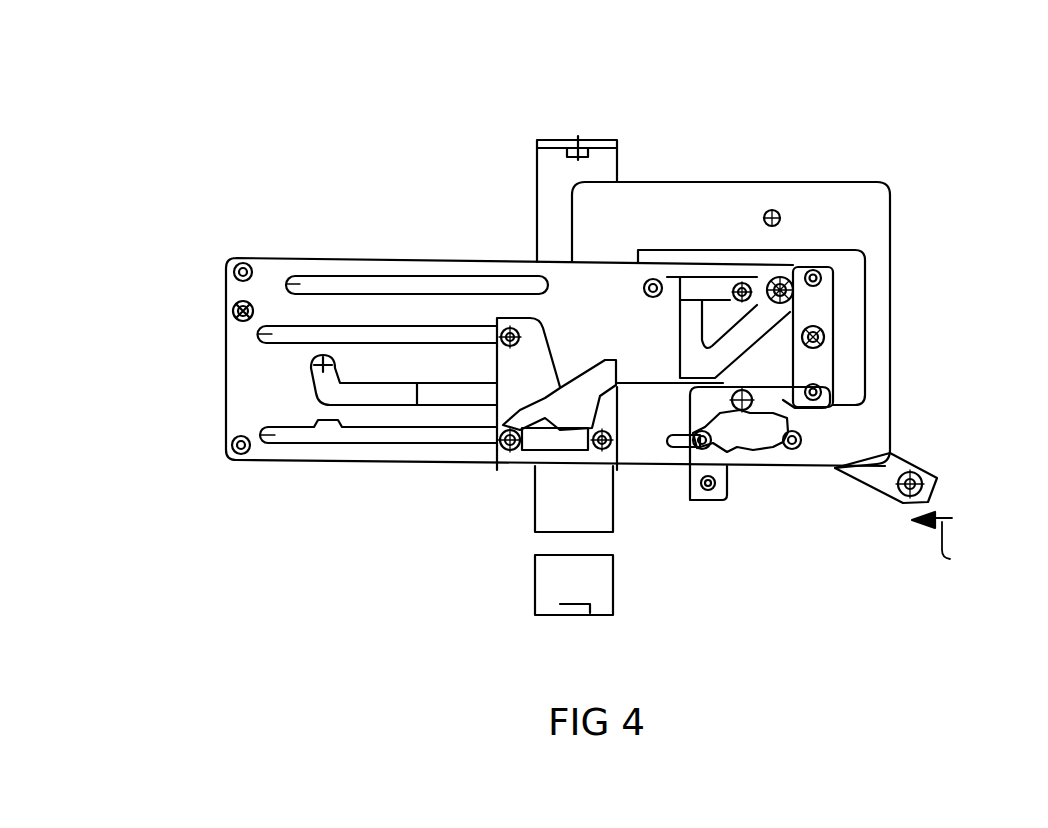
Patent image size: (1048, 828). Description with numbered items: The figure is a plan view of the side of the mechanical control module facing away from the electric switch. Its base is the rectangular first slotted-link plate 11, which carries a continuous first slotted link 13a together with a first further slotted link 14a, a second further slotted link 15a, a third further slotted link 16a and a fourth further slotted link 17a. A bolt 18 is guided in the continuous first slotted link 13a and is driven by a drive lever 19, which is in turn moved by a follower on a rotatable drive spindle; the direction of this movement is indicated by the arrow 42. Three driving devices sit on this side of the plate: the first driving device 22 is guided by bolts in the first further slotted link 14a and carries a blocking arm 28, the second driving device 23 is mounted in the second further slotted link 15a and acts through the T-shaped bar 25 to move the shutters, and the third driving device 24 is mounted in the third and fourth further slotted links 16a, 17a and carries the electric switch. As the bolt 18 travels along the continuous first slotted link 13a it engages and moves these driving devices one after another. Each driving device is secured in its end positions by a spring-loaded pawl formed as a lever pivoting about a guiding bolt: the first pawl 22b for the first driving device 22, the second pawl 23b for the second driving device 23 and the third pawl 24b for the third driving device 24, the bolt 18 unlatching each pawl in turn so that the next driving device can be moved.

The first slotted-link plate 11 is at (283, 258).
The second further slotted link 15a is at (437, 277).
The third further slotted link 16a is at (258, 335).
The continuous first slotted link 13a is at (317, 367).
The fourth further slotted link 17a is at (350, 445).
The third driving device 24 is at (497, 353).
The third pawl 24b is at (622, 410).
The T-shaped bar 25 is at (537, 148).
The blocking arm 28 is at (745, 185).
The second driving device 23 is at (685, 265).
The second pawl 23b is at (776, 318).
The bolt 18 is at (745, 370).
The drive lever 19 is at (912, 457).
The first driving device 22 is at (690, 403).
The first pawl 22b is at (790, 416).
The first further slotted link 14a is at (668, 447).
The arrow 42 is at (935, 555).